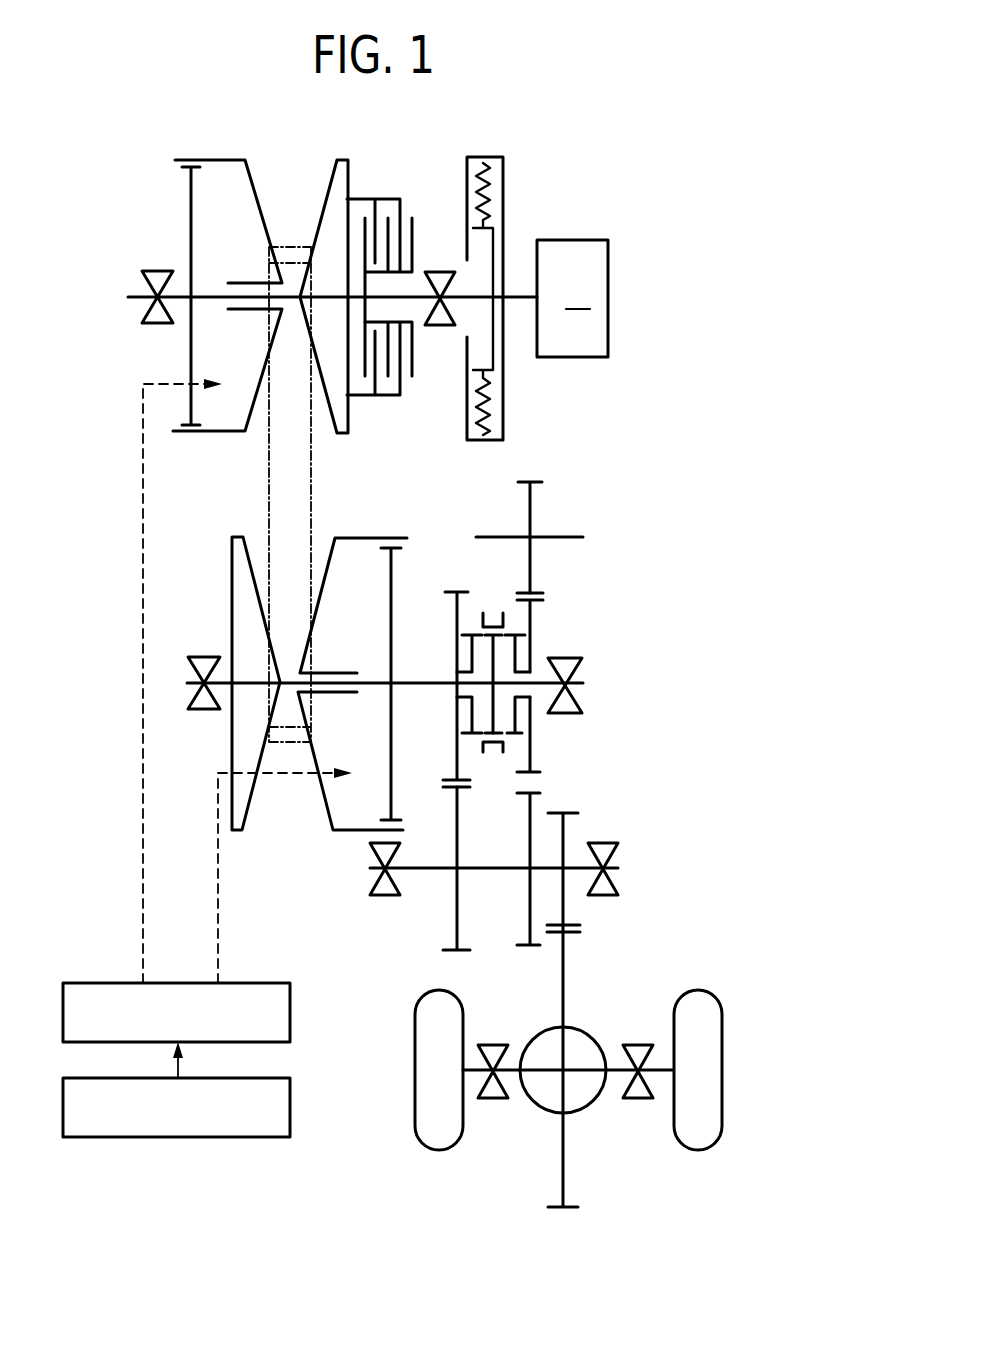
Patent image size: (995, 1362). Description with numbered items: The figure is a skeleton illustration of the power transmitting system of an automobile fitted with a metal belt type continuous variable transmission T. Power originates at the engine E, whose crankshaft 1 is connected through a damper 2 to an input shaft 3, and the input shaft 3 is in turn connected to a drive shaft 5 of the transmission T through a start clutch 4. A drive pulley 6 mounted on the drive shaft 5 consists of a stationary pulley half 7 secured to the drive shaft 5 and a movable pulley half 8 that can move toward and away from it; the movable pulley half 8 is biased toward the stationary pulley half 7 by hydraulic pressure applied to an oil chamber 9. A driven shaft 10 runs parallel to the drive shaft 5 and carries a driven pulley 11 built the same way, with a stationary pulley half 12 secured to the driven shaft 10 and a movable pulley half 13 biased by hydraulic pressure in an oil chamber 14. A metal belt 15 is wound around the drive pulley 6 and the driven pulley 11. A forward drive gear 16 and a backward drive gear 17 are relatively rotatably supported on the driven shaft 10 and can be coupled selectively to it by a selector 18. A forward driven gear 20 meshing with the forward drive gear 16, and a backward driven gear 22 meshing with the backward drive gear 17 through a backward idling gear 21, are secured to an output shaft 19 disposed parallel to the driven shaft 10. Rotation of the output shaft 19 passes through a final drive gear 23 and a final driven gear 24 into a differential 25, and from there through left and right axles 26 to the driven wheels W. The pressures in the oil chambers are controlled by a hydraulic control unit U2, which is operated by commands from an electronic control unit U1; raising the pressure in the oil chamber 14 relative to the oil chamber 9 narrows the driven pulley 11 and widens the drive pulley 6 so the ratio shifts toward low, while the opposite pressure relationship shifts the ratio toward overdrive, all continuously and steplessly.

The crankshaft 1 is at (516, 302).
The damper 2 is at (515, 191).
The input shaft 3 is at (460, 295).
The start clutch 4 is at (391, 191).
The drive shaft 5 is at (207, 295).
The drive pulley 6 is at (282, 200).
The stationary pulley half 7 is at (333, 190).
The movable pulley half 8 is at (250, 195).
The oil chamber 9 is at (238, 361).
The driven shaft 10 is at (433, 682).
The driven pulley 11 is at (299, 817).
The stationary pulley half 12 is at (233, 572).
The movable pulley half 13 is at (330, 567).
The oil chamber 14 is at (382, 758).
The metal belt 15 is at (312, 495).
The forward drive gear 16 is at (450, 588).
The backward drive gear 17 is at (538, 603).
The selector 18 is at (492, 745).
The output shaft 19 is at (478, 867).
The forward driven gear 20 is at (462, 953).
The backward idling gear 21 is at (538, 483).
The backward driven gear 22 is at (523, 953).
The final drive gear 23 is at (572, 815).
The final driven gear 24 is at (572, 932).
The differential 25 is at (587, 1032).
The axles 26 is at (507, 1072).
The metal belt type continuous variable transmission T is at (219, 483).
The engine E is at (572, 298).
The driven wheels W is at (413, 1123).
The electronic control unit U1 is at (290, 1097).
The hydraulic control unit U2 is at (290, 1007).